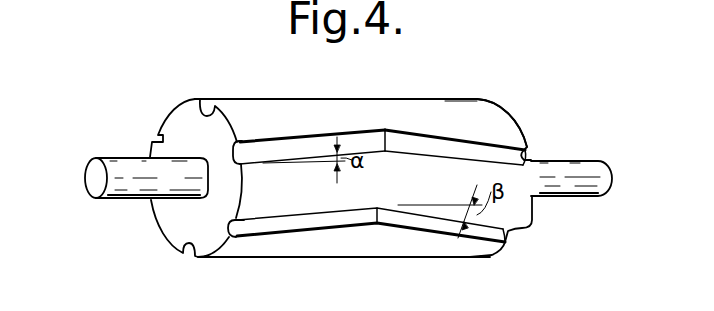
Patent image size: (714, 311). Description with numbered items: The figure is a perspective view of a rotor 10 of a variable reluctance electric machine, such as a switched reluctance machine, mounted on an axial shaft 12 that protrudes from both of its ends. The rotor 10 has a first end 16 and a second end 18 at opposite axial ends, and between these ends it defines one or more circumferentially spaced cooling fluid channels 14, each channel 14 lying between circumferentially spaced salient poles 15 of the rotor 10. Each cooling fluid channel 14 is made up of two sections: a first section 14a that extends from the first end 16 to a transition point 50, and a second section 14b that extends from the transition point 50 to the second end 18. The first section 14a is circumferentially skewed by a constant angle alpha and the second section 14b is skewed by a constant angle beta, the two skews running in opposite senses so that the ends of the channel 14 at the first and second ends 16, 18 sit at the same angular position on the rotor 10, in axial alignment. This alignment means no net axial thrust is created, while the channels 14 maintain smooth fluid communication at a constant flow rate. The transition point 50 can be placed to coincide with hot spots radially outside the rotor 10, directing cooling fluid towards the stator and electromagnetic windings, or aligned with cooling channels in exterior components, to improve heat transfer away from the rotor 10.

The rotor 10 is at (480, 248).
The axial shaft 12 is at (130, 168).
The cooling fluid channel 14 is at (377, 152).
The first section 14a is at (282, 146).
The second section 14b is at (477, 152).
The salient pole 15 is at (307, 242).
The first end 16 is at (185, 117).
The second end 18 is at (528, 122).
The transition point 50 is at (386, 152).